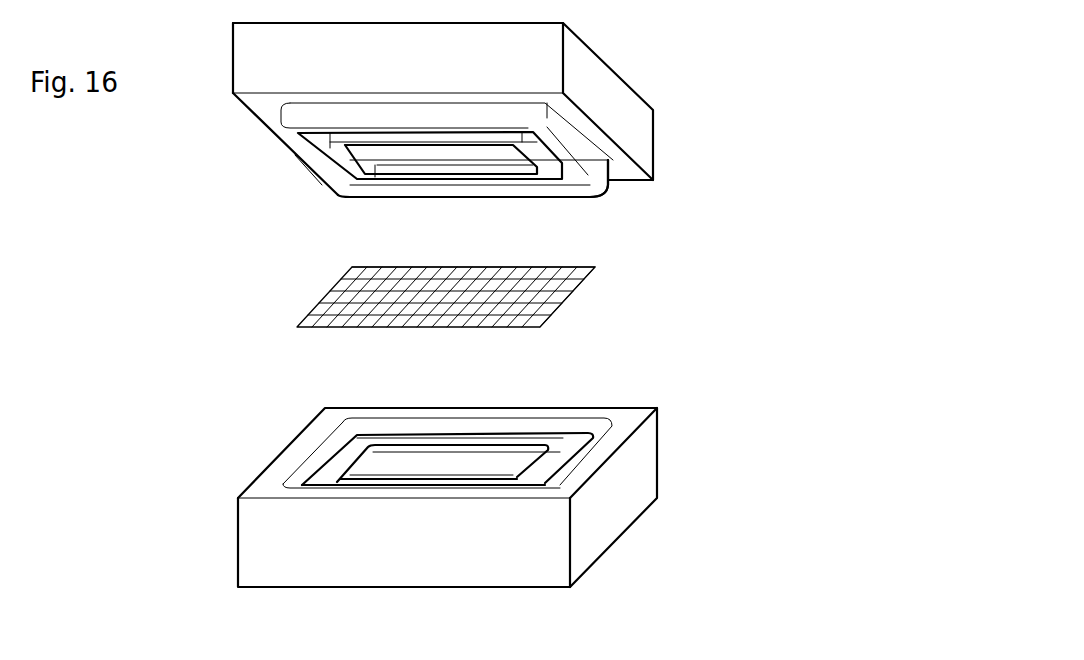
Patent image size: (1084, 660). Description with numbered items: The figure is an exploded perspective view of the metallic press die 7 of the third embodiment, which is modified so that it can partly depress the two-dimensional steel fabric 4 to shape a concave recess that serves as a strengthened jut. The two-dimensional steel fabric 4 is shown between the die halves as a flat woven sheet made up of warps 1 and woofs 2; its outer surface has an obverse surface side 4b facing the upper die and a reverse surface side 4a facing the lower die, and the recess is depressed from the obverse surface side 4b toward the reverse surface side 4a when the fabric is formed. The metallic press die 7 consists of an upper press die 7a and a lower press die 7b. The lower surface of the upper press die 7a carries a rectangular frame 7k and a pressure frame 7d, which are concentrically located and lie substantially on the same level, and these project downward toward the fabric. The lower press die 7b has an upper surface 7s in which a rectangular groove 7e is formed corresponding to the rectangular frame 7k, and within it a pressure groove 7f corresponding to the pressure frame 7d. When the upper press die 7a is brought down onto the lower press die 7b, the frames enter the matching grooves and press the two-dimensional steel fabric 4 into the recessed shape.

The metallic press die 7 is at (512, 341).
The upper press die 7a is at (600, 72).
The lower press die 7b is at (612, 523).
The pressure frame 7d is at (405, 172).
The rectangular frame 7k is at (588, 160).
The rectangular groove 7e is at (548, 422).
The pressure groove 7f is at (355, 460).
The upper surface 7s is at (450, 465).
The two-dimensional steel fabric 4 is at (426, 303).
The reverse surface side 4a is at (340, 330).
The obverse surface side 4b is at (345, 275).
The warps 1 is at (562, 300).
The woofs 2 is at (592, 266).